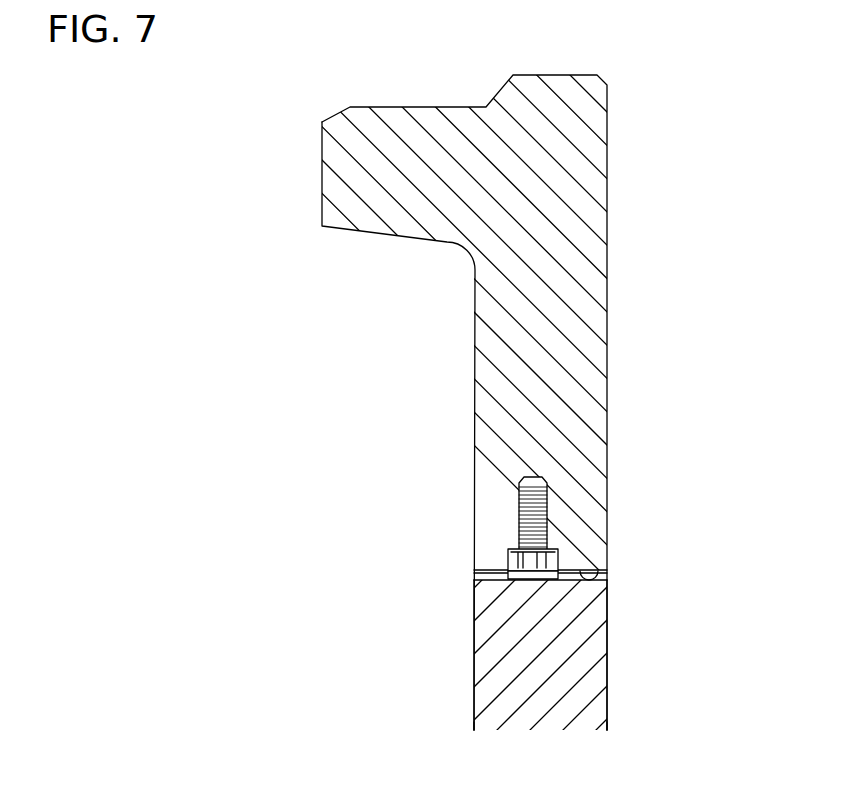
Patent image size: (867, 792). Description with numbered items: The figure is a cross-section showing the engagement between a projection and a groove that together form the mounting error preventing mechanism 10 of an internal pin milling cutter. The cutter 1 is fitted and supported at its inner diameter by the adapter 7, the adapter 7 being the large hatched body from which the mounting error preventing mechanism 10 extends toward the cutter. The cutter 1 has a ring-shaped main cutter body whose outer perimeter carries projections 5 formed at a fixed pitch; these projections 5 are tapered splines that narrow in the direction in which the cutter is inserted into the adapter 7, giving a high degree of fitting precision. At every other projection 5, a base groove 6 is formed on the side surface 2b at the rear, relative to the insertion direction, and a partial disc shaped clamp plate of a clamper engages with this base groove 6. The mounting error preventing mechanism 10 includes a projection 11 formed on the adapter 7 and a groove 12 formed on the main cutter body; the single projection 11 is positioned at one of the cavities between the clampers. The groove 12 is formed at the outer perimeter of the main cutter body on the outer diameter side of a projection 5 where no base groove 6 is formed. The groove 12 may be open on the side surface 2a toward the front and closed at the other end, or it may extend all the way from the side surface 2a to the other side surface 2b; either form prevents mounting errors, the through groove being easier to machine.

The cutter 1 is at (549, 600).
The side surface 2a is at (474, 667).
The side surface 2b is at (608, 612).
The projection 5 is at (593, 699).
The base groove 6 is at (592, 586).
The adapter 7 is at (609, 230).
The mounting error preventing mechanism 10 is at (441, 538).
The projection 11 is at (508, 551).
The groove 12 is at (508, 573).